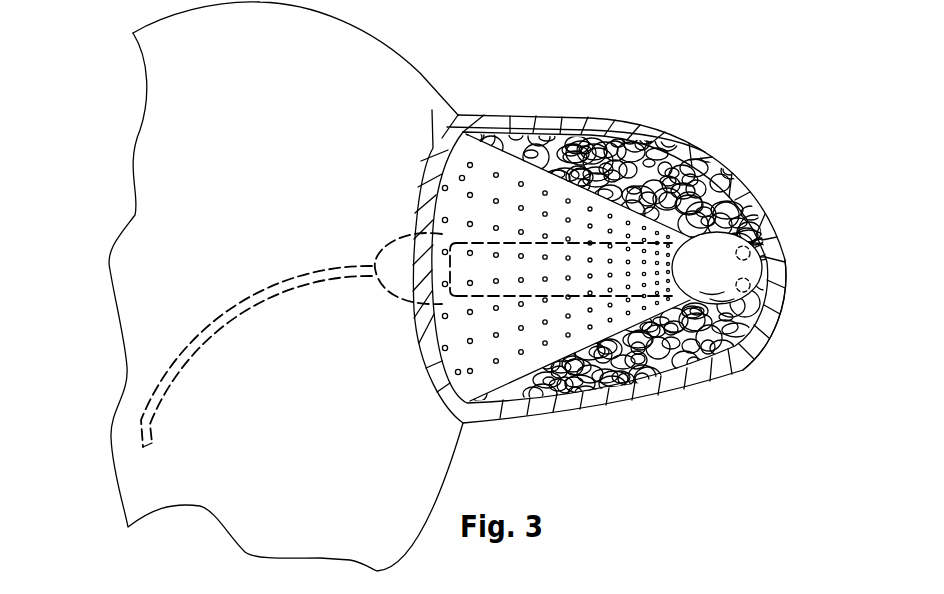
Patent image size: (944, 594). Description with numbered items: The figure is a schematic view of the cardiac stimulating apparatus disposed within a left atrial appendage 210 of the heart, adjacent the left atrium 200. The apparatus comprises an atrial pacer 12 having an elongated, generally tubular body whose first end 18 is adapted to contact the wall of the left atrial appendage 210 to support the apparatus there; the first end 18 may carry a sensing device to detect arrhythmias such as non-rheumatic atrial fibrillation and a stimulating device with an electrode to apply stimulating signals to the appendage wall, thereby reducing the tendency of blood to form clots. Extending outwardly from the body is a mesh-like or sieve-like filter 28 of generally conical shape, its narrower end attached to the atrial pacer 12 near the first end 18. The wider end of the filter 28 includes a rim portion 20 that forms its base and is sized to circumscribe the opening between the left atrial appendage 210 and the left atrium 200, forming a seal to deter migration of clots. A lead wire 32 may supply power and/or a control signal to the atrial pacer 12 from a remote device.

The left atrium 200 is at (303, 432).
The rim portion 20 is at (432, 110).
The left atrial appendage 210 is at (633, 143).
The filter 28 is at (538, 366).
The lead wire 32 is at (140, 428).
The atrial pacer 12 is at (706, 310).
The first end 18 is at (762, 270).